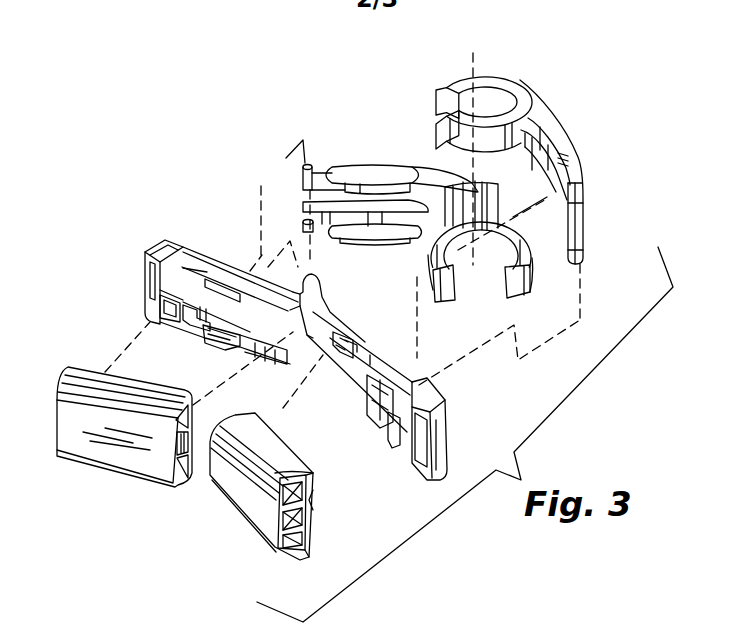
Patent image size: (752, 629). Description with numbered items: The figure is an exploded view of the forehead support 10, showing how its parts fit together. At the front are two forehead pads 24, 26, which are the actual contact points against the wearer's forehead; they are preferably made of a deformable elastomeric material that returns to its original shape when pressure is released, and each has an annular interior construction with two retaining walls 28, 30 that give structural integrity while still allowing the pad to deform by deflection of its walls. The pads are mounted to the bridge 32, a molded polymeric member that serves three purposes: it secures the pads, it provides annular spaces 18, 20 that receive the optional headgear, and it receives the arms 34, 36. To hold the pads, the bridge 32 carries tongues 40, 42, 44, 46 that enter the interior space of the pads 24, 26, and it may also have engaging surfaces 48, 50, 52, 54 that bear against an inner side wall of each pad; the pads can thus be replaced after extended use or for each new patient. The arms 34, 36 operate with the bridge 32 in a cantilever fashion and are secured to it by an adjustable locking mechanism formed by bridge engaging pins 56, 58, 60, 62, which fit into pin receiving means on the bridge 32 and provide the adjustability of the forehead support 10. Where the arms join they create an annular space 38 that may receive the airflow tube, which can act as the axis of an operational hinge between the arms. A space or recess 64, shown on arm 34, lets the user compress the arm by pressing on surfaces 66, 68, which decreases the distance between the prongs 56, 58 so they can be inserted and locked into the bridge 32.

The forehead support 10 is at (219, 98).
The annular space 18 is at (299, 348).
The annular space 20 is at (420, 437).
The forehead pad 24 is at (88, 455).
The forehead pad 26 is at (220, 504).
The retaining wall 28 is at (292, 522).
The retaining wall 30 is at (287, 562).
The bridge 32 is at (308, 305).
The arm 34 is at (456, 151).
The arm 36 is at (556, 140).
The annular space 38 is at (491, 90).
The tongue 40 is at (165, 302).
The tongue 42 is at (242, 320).
The tongue 44 is at (336, 380).
The tongue 46 is at (393, 443).
The engaging surface 48 is at (212, 288).
The engaging surface 50 is at (193, 330).
The engaging surface 52 is at (359, 330).
The engaging surface 54 is at (364, 398).
The bridge engaging pin 56 is at (262, 185).
The bridge engaging pin 58 is at (302, 227).
The bridge engaging pin 60 is at (586, 212).
The bridge engaging pin 62 is at (589, 253).
The space 64 is at (350, 197).
The surface 66 is at (384, 173).
The surface 68 is at (395, 242).